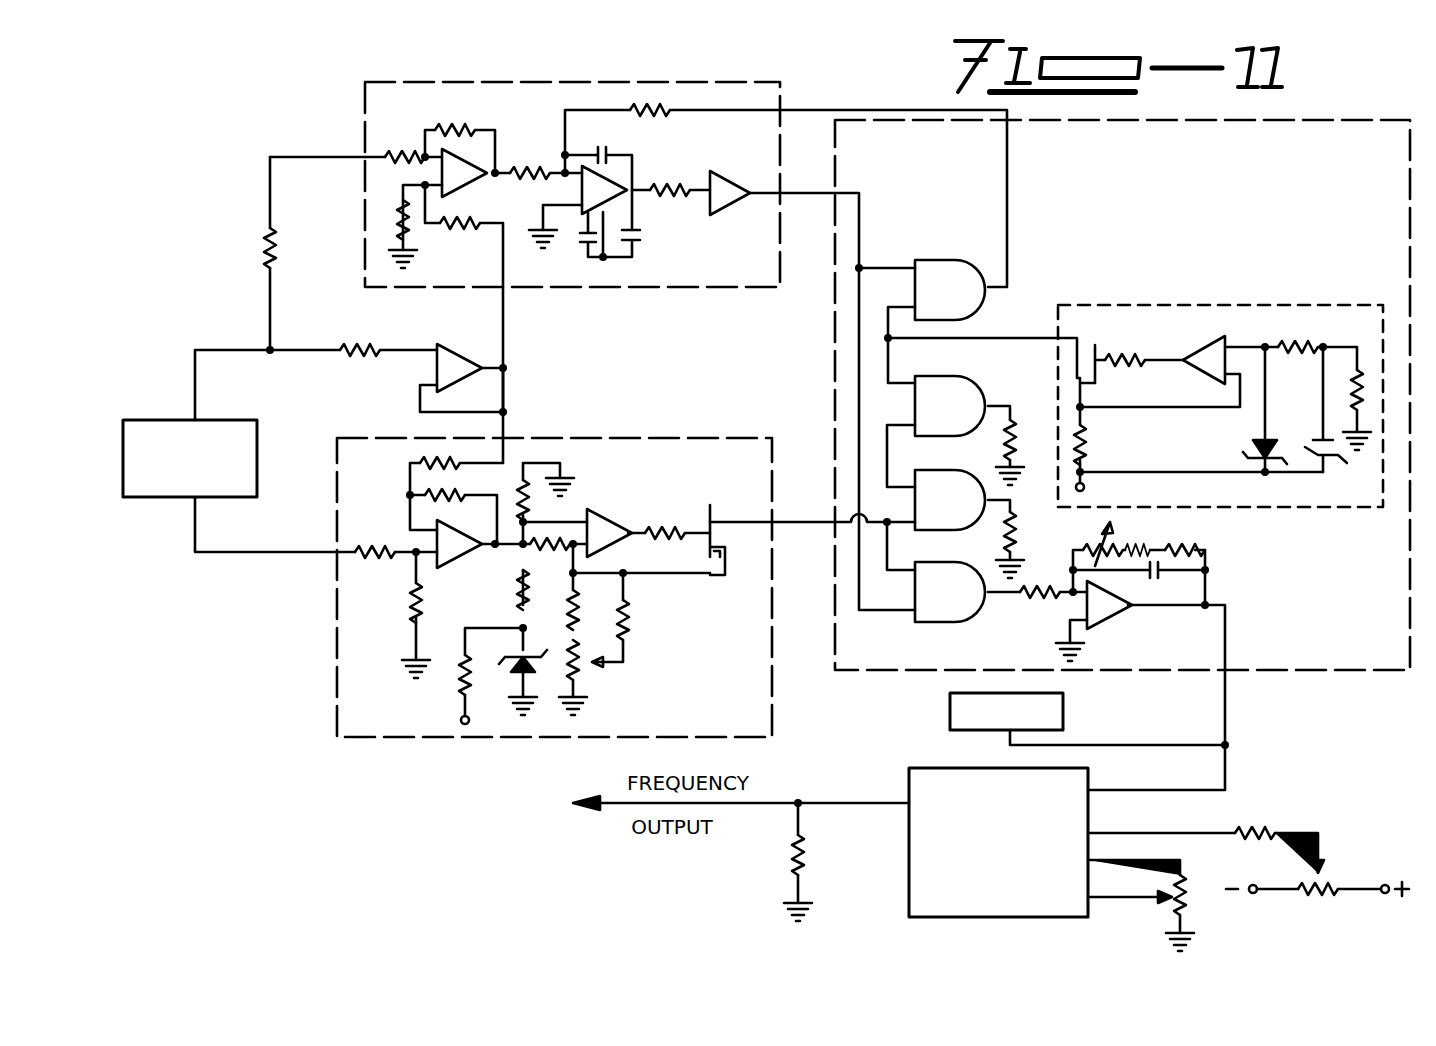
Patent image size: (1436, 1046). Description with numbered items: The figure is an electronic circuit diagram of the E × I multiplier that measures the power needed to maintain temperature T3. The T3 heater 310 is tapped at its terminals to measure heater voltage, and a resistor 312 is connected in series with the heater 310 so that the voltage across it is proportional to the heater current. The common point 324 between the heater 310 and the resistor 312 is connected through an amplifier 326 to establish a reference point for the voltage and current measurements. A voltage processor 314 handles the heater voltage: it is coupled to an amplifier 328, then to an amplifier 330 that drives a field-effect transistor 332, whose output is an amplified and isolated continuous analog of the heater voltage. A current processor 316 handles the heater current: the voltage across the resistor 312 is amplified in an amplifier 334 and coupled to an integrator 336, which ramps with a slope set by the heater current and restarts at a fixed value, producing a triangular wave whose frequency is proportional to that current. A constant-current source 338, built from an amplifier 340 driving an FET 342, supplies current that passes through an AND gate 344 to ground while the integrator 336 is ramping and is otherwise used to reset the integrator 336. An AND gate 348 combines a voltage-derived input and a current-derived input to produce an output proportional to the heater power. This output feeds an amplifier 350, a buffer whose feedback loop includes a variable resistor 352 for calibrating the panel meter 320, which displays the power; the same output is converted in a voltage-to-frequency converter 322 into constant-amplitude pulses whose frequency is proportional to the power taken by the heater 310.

The T3 heater 310 is at (150, 426).
The resistor 312 is at (262, 241).
The voltage processor 314 is at (354, 621).
The current processor 316 is at (364, 124).
The panel meter 320 is at (1064, 707).
The voltage-to-frequency converter 322 is at (1090, 820).
The common point 324 is at (272, 360).
The amplifier 326 is at (456, 350).
The amplifier 328 is at (443, 548).
The amplifier 330 is at (598, 530).
The field-effect transistor 332 is at (716, 572).
The amplifier 334 is at (462, 175).
The integrator 336 is at (628, 186).
The constant-current source 338 is at (1250, 308).
The amplifier 340 is at (1206, 356).
The FET 342 is at (1080, 366).
The AND gate 344 is at (945, 386).
The AND gate 348 is at (948, 616).
The amplifier 350 is at (1108, 611).
The variable resistor 352 is at (1113, 541).